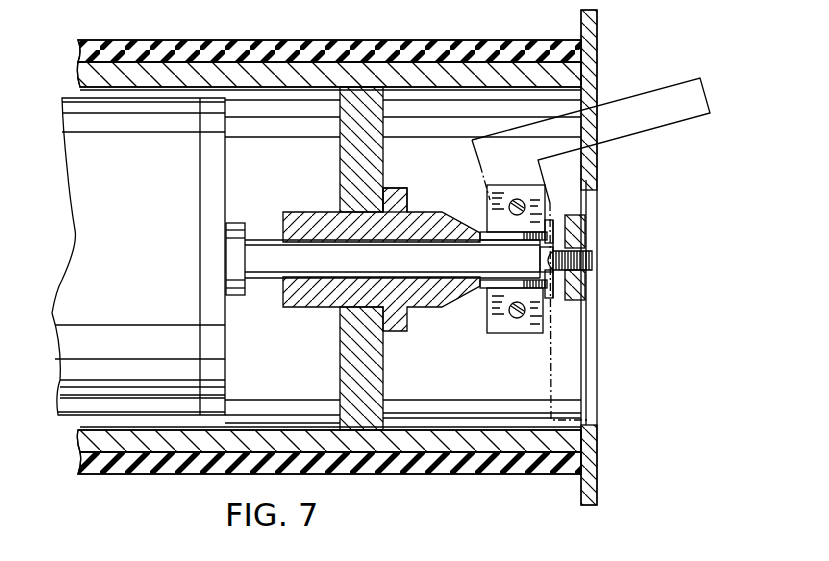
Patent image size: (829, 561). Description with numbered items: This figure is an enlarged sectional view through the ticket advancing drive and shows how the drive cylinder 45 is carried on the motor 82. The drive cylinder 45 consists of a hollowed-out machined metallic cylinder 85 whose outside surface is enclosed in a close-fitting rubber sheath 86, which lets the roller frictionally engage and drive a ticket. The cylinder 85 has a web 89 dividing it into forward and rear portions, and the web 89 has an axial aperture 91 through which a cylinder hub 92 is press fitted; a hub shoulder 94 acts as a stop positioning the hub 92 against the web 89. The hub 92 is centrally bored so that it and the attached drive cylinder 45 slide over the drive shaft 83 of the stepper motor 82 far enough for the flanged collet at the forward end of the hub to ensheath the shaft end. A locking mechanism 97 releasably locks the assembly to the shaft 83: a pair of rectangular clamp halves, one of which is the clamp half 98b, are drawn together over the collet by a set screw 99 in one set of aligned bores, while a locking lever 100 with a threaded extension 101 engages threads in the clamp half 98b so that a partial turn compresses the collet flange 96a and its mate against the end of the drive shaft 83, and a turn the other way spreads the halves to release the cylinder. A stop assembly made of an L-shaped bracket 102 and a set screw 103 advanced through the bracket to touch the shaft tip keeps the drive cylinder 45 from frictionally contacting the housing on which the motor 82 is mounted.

The drive cylinder 45 is at (527, 476).
The motor 82 is at (83, 163).
The drive shaft 83 is at (262, 247).
The machined metallic cylinder 85 is at (163, 72).
The rubber sheath 86 is at (250, 50).
The web 89 is at (350, 150).
The axial aperture 91 is at (340, 307).
The cylinder hub 92 is at (430, 220).
The hub shoulder 94 is at (397, 197).
The collet flange 96a is at (555, 298).
The locking mechanism 97 is at (552, 200).
The clamp half 98b is at (487, 307).
The set screw 99 is at (517, 320).
The locking lever 100 is at (650, 88).
The threaded extension 101 is at (518, 200).
The L-shaped bracket 102 is at (584, 230).
The set screw 103 is at (590, 258).